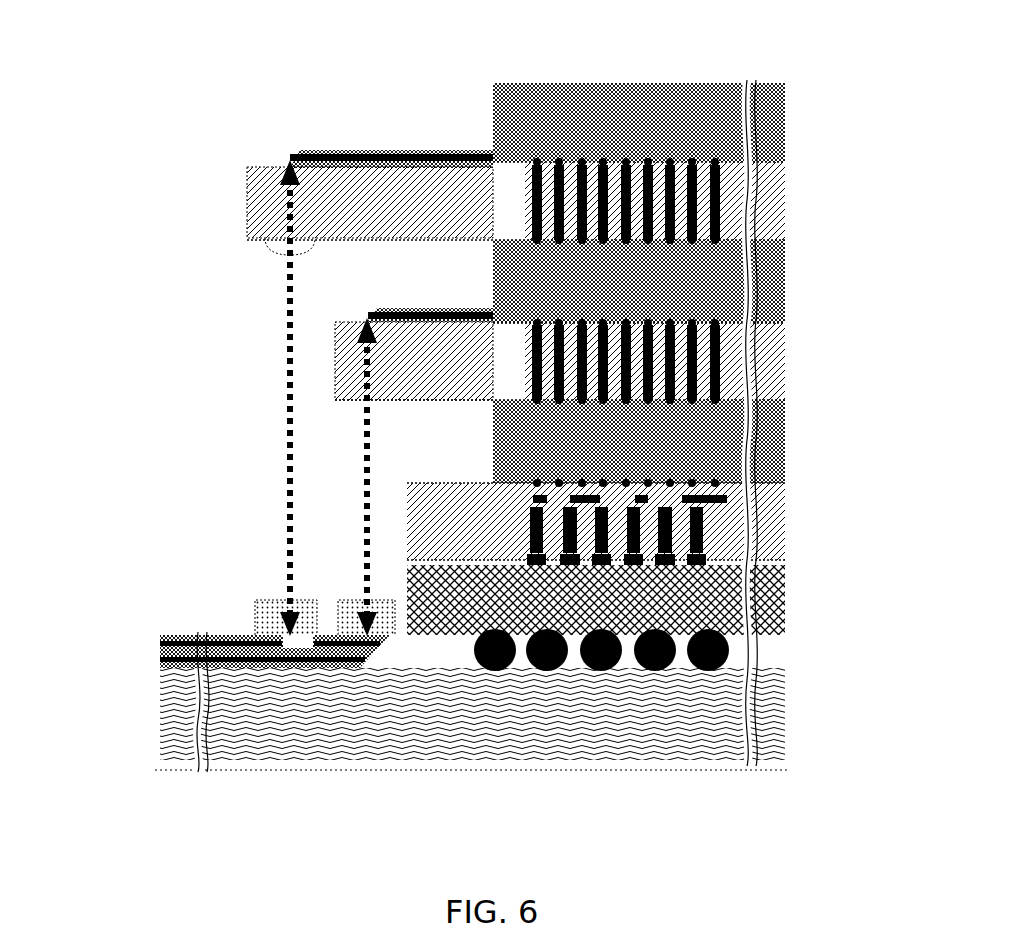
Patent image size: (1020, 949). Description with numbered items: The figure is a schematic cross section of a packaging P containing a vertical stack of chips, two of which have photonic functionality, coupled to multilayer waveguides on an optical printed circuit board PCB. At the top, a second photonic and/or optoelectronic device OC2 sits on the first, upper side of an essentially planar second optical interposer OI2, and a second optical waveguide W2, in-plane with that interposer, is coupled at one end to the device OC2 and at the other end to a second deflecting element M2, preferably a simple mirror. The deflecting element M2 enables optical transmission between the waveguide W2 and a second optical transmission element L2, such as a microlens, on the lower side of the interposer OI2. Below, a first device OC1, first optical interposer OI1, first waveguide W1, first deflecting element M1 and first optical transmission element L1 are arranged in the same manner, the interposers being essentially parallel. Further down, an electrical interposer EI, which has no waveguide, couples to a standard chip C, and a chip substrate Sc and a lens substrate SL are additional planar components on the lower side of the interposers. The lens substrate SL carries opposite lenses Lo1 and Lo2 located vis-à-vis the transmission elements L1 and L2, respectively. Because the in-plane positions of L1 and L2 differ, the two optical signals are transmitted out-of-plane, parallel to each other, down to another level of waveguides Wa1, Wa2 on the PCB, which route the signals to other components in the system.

The packaging P is at (815, 781).
The photonic and/or optoelectronic device OC2 is at (785, 108).
The optical interposer OI2 is at (785, 185).
The photonic and/or optoelectronic device OC1 is at (785, 265).
The optical interposer OI1 is at (785, 340).
The chip C is at (768, 430).
The electrical interposer EI is at (775, 500).
The chip substrate Sc is at (783, 585).
The optical printed circuit board PCB is at (780, 697).
The optical waveguide W2 is at (352, 148).
The deflecting element M2 is at (292, 150).
The optical transmission element L2 is at (262, 246).
The additional optical transmission element Lo2 is at (262, 600).
The optical waveguide W1 is at (405, 308).
The deflecting element M1 is at (372, 309).
The optical transmission element L1 is at (340, 400).
The additional optical transmission element Lo1 is at (348, 600).
The lens substrate SL is at (257, 620).
The additional waveguide Wa2 is at (160, 636).
The additional waveguide Wa1 is at (158, 656).